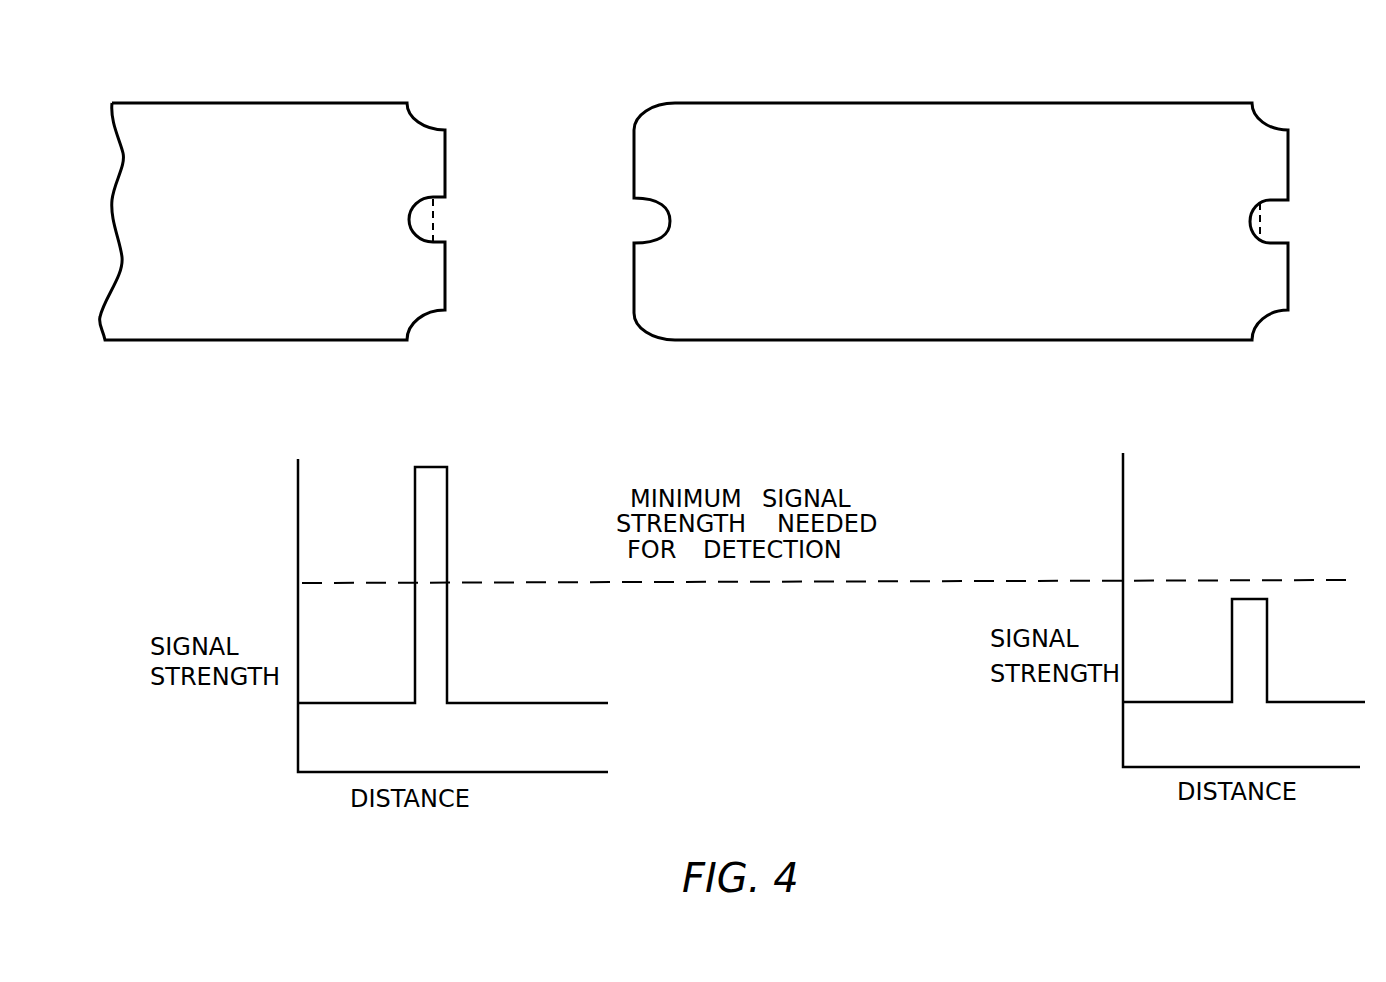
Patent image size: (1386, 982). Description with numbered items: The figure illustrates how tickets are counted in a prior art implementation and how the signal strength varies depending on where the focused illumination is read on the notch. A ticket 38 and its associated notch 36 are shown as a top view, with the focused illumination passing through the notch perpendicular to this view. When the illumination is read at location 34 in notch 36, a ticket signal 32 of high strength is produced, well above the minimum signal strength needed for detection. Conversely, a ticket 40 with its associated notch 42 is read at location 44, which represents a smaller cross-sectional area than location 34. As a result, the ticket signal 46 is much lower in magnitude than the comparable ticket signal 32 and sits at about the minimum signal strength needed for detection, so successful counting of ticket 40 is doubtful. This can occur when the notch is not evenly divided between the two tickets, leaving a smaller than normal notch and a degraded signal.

The ticket signal 32 is at (442, 465).
The location 34 is at (437, 212).
The notch 36 is at (455, 225).
The ticket 38 is at (381, 103).
The ticket 40 is at (707, 100).
The notch 42 is at (1282, 228).
The location 44 is at (1263, 210).
The ticket signal 46 is at (1253, 598).